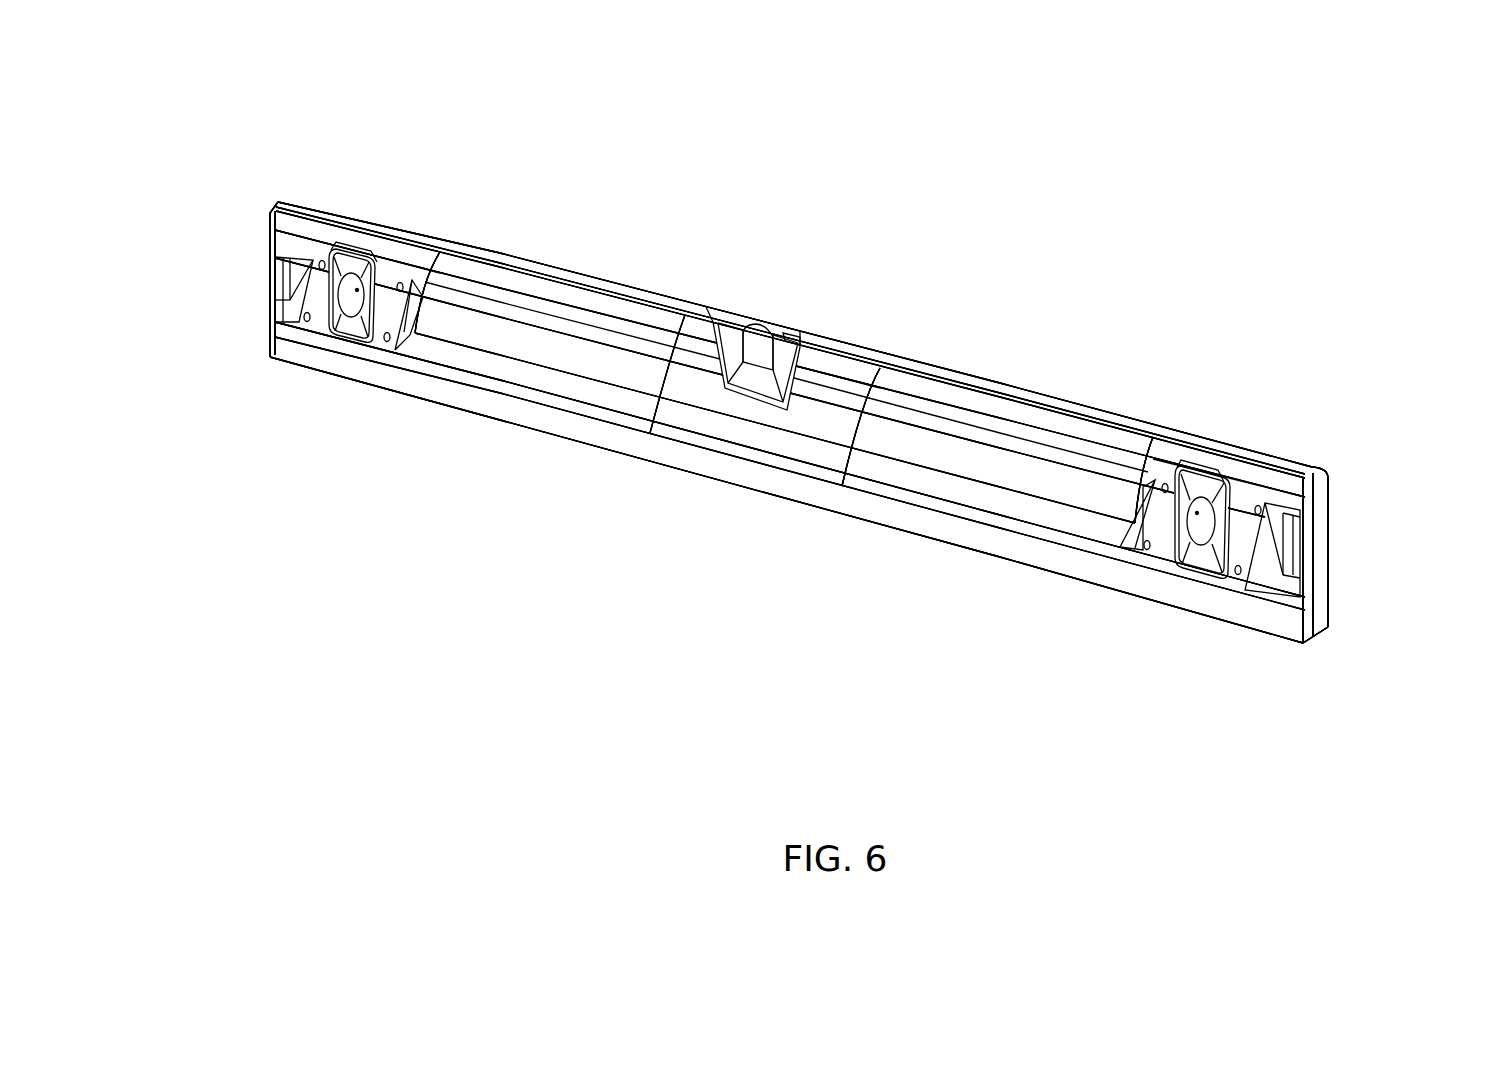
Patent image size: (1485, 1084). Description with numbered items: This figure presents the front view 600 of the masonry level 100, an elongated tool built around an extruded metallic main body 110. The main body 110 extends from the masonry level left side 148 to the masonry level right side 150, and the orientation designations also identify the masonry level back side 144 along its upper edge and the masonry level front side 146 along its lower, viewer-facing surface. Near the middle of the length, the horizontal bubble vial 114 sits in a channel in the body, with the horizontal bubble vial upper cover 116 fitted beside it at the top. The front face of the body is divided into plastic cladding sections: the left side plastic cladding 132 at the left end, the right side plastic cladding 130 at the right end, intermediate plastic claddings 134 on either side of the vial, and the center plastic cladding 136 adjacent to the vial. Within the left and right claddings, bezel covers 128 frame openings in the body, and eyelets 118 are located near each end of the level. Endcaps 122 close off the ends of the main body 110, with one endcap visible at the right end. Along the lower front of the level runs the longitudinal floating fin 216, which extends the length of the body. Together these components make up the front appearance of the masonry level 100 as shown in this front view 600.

The masonry level 100 is at (453, 557).
The extruded metallic main body 110 is at (1212, 667).
The horizontal bubble vial 114 is at (757, 333).
The horizontal bubble vial upper cover 116 is at (790, 337).
The eyelets 118 is at (283, 300).
The endcaps 122 is at (1322, 482).
The bezel covers 128 is at (347, 338).
The right side plastic cladding 130 is at (1238, 468).
The left side plastic cladding 132 is at (312, 232).
The intermediate plastic claddings 134 is at (592, 303).
The center plastic cladding 136 is at (848, 367).
The masonry level back side 144 is at (861, 211).
The masonry level front side 146 is at (664, 602).
The masonry level left side 148 is at (206, 211).
The masonry level right side 150 is at (1357, 599).
The longitudinal floating fin 216 is at (888, 517).
The front view 600 is at (1202, 191).